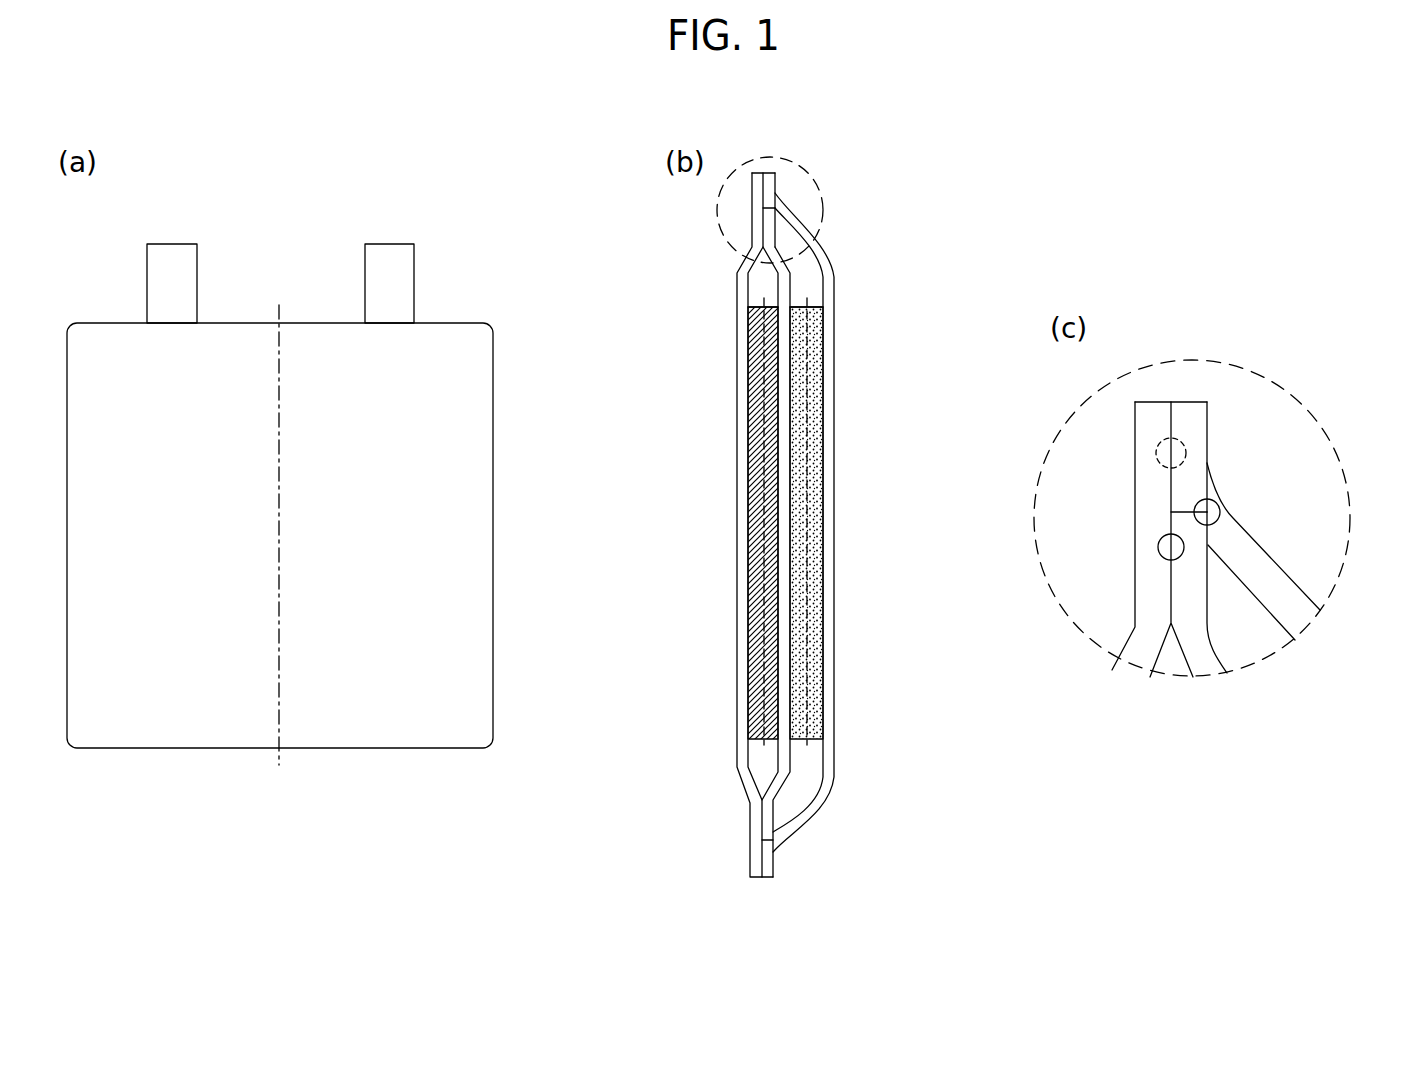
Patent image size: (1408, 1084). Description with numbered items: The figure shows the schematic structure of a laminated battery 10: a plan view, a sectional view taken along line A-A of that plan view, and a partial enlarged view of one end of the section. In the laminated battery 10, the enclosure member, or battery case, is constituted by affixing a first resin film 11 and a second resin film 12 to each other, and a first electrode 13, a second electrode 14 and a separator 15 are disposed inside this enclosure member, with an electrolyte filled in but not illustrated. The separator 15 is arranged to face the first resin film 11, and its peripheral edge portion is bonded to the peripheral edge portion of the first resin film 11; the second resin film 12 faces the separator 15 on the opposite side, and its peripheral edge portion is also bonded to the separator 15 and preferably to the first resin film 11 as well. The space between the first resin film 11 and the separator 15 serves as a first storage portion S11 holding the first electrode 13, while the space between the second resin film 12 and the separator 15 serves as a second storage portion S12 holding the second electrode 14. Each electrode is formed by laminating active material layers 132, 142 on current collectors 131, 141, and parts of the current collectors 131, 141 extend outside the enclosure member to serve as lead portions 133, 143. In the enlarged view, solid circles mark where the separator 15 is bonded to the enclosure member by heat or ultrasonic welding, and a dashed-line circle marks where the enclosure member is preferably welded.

The laminated battery 10 is at (730, 498).
The first resin film 11 is at (742, 762).
The second resin film 12 is at (827, 747).
The first electrode 13 is at (680, 521).
The current collector 131 is at (760, 480).
The active material layer 132 is at (753, 545).
The lead portion 133 is at (172, 260).
The second electrode 14 is at (889, 521).
The current collector 141 is at (807, 412).
The active material layer 142 is at (813, 477).
The lead portion 143 is at (390, 260).
The separator 15 is at (783, 768).
The first storage portion S11 is at (748, 292).
The second storage portion S12 is at (823, 292).